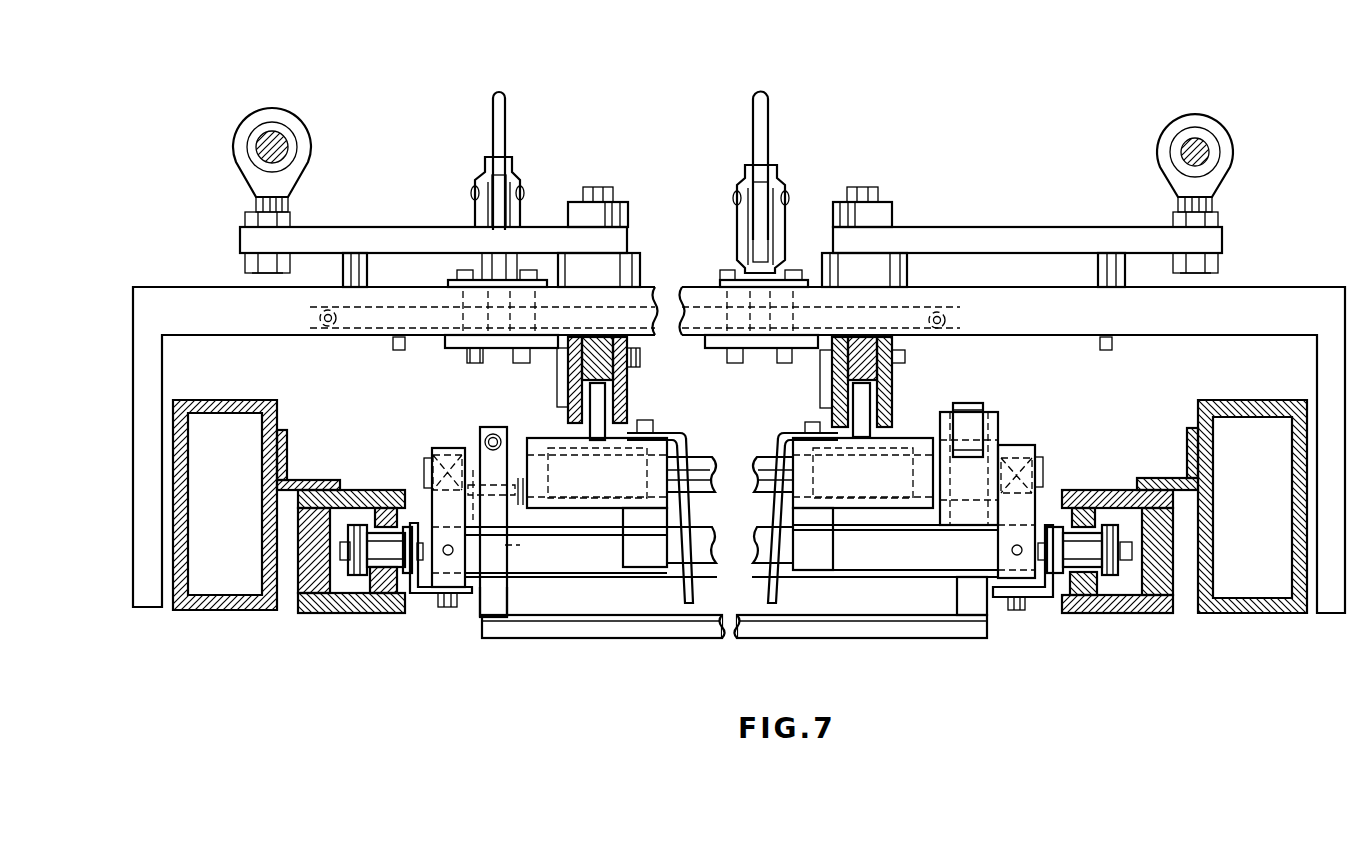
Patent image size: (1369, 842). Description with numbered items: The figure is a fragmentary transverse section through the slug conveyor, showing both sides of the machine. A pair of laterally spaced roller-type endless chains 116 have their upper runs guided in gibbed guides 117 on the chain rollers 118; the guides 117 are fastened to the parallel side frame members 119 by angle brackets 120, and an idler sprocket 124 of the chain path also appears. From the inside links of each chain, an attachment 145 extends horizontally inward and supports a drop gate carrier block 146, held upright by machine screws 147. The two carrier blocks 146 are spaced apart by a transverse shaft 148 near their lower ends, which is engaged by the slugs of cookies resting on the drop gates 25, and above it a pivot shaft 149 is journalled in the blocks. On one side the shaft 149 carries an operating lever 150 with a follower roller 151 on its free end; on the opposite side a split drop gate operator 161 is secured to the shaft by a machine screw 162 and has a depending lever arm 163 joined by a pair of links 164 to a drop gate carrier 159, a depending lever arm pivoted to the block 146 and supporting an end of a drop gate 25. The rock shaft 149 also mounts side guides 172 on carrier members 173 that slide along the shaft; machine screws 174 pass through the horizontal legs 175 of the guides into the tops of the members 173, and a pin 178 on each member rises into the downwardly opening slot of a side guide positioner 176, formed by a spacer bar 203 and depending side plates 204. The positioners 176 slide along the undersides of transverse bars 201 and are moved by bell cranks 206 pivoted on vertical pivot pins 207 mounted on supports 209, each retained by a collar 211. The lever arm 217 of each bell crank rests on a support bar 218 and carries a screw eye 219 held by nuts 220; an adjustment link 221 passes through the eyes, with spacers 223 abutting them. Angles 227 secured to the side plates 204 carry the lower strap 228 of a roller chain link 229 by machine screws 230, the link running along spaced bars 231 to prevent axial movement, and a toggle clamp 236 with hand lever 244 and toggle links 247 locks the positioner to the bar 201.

The drop gate 25 is at (630, 632).
The endless chain 116 is at (353, 577).
The gibbed guide 117 is at (378, 600).
The roller 118 is at (385, 540).
The side frame member 119 is at (249, 388).
The angle bracket 120 is at (287, 445).
The idler sprocket 124 is at (645, 420).
The attachment 145 is at (422, 595).
The drop gate carrier block 146 is at (445, 450).
The machine screw 147 is at (447, 607).
The transverse shaft 148 is at (640, 580).
The pivot shaft 149 is at (700, 457).
The operating lever 150 is at (998, 443).
The follower roller 151 is at (975, 405).
The drop gate carrier 159 is at (510, 600).
The drop gate operator 161 is at (500, 425).
The machine screw 162 is at (487, 435).
The lever arm 163 is at (495, 503).
The link 164 is at (528, 500).
The side guide 172 is at (688, 450).
The carrier member 173 is at (530, 440).
The machine screw 174 is at (811, 422).
The horizontal leg 175 is at (651, 440).
The side guide positioner 176 is at (628, 345).
The pin 178 is at (600, 400).
The transverse bar 201 is at (1263, 300).
The spacer bar 203 is at (598, 345).
The side plate 204 is at (955, 342).
The bell crank 206 is at (410, 227).
The vertical pivot pin 207 is at (612, 190).
The support 209 is at (641, 272).
The collar 211 is at (628, 213).
The lever arm 217 is at (330, 233).
The support bar 218 is at (345, 270).
The screw eye 219 is at (256, 130).
The nut 220 is at (248, 214).
The adjustment link 221 is at (289, 148).
The spacer 223 is at (296, 160).
The angle 227 is at (458, 350).
The lower strap 228 is at (447, 340).
The roller chain link 229 is at (450, 300).
The machine screw 230 is at (560, 348).
The spaced bar 231 is at (397, 350).
The toggle clamp 236 is at (506, 150).
The hand lever 244 is at (493, 120).
The toggle link 247 is at (508, 215).